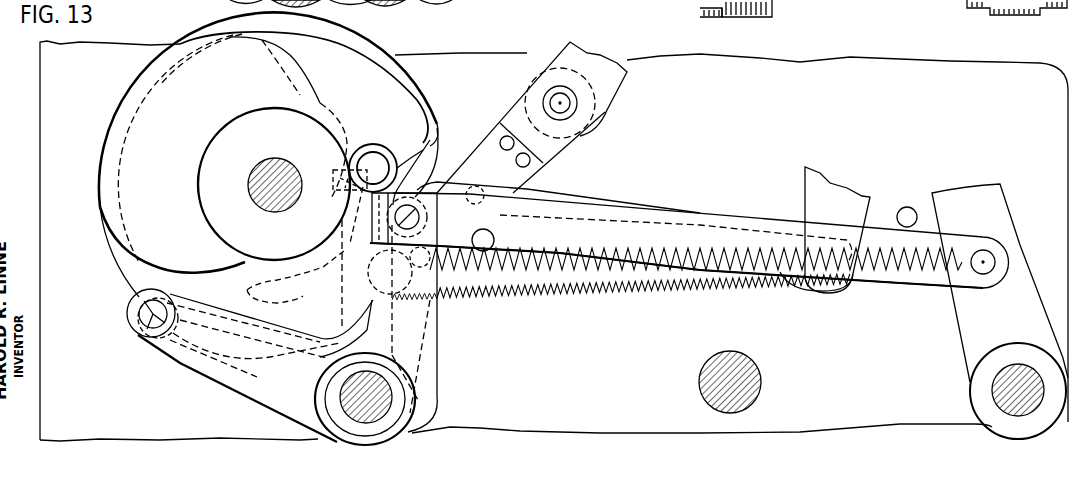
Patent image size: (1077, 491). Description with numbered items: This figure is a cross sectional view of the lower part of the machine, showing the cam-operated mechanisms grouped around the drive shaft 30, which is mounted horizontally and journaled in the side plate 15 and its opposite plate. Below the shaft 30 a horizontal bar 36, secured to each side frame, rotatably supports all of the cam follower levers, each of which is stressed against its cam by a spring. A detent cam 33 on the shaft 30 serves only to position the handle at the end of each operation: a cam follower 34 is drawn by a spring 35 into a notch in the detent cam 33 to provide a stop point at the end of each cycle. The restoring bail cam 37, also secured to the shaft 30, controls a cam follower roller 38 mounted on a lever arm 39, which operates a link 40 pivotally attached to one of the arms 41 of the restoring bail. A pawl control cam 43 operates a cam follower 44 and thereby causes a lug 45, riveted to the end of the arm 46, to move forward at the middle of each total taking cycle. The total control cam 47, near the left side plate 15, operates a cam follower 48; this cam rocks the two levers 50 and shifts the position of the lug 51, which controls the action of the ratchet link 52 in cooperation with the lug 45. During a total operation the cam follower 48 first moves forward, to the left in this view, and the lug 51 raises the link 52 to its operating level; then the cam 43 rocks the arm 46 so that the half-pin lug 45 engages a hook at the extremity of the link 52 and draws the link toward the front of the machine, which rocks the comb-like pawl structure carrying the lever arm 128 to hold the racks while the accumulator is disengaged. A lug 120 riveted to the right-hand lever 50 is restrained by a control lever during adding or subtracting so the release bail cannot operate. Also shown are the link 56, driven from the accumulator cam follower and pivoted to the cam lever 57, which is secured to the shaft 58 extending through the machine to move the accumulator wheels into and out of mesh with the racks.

The side plate 15 is at (48, 115).
The drive shaft 30 is at (272, 190).
The detent cam 33 is at (420, 118).
The cam follower 34 is at (160, 347).
The spring 35 is at (506, 276).
The horizontal bar 36 is at (383, 407).
The restoring bail cam 37 is at (207, 258).
The cam follower roller 38 is at (433, 146).
The lever arm 39 is at (433, 338).
The link 40 is at (540, 211).
The arm of restoring bail 41 is at (989, 202).
The pawl control cam 43 is at (272, 302).
The cam follower 44 is at (130, 308).
The lug 45 is at (330, 190).
The arm 46 is at (345, 281).
The total control cam 47 is at (370, 54).
The cam follower 48 is at (432, 277).
The lever 50 is at (578, 133).
The lug 51 is at (533, 228).
The ratchet link 52 is at (593, 198).
The link 56 is at (652, 0).
The cam lever 57 is at (745, 15).
The shaft 58 is at (750, 352).
The lug 120 is at (581, 117).
The lever arm 128 is at (852, 208).